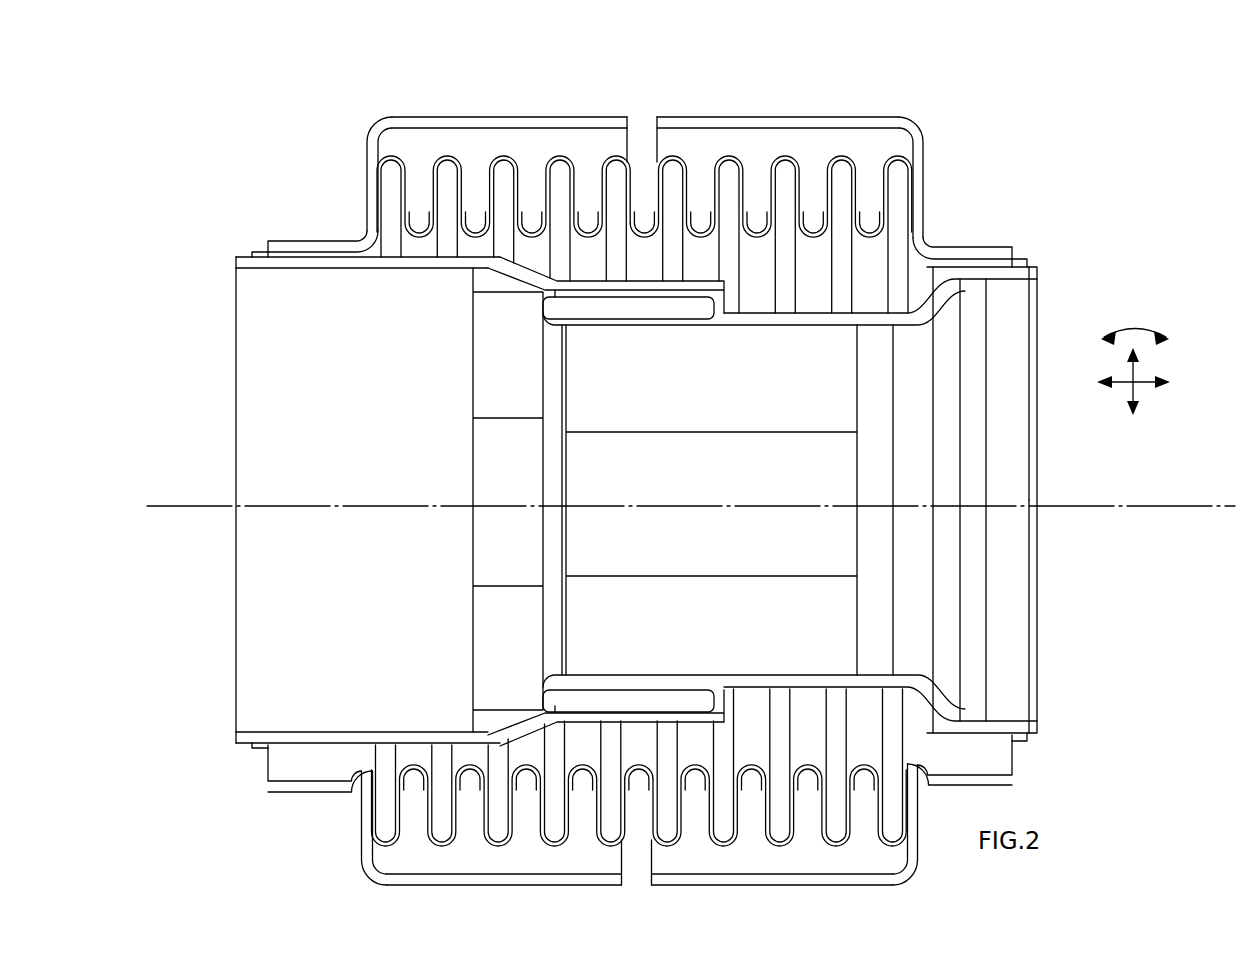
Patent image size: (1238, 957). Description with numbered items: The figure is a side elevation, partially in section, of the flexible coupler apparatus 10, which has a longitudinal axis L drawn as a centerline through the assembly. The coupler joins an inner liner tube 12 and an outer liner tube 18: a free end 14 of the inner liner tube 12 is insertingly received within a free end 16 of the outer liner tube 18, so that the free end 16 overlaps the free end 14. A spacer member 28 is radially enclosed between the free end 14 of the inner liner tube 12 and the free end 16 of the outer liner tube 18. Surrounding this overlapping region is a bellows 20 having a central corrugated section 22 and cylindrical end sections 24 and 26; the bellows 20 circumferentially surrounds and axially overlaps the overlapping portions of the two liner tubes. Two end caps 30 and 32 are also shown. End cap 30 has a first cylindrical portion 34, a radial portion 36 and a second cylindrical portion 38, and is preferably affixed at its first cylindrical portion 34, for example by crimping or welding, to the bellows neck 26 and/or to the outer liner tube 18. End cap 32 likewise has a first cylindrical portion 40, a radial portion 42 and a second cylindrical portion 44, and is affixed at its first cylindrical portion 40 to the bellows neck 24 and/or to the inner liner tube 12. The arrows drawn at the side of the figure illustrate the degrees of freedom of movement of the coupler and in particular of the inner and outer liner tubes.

The flexible coupler apparatus 10 is at (688, 477).
The inner liner tube 12 is at (1010, 477).
The free end of inner liner tube 14 is at (717, 640).
The free end of outer liner tube 16 is at (553, 298).
The outer liner tube 18 is at (373, 467).
The bellows 20 is at (639, 858).
The central corrugated section 22 is at (641, 126).
The cylindrical end section 24 is at (1030, 268).
The cylindrical end section 26 is at (250, 253).
The spacer member 28 is at (637, 302).
The end cap 30 is at (449, 460).
The end cap 32 is at (834, 474).
The first cylindrical portion 34 is at (312, 240).
The radial portion 36 is at (372, 165).
The second cylindrical portion 38 is at (540, 117).
The first cylindrical portion 40 is at (965, 246).
The radial portion 42 is at (925, 200).
The second cylindrical portion 44 is at (726, 120).